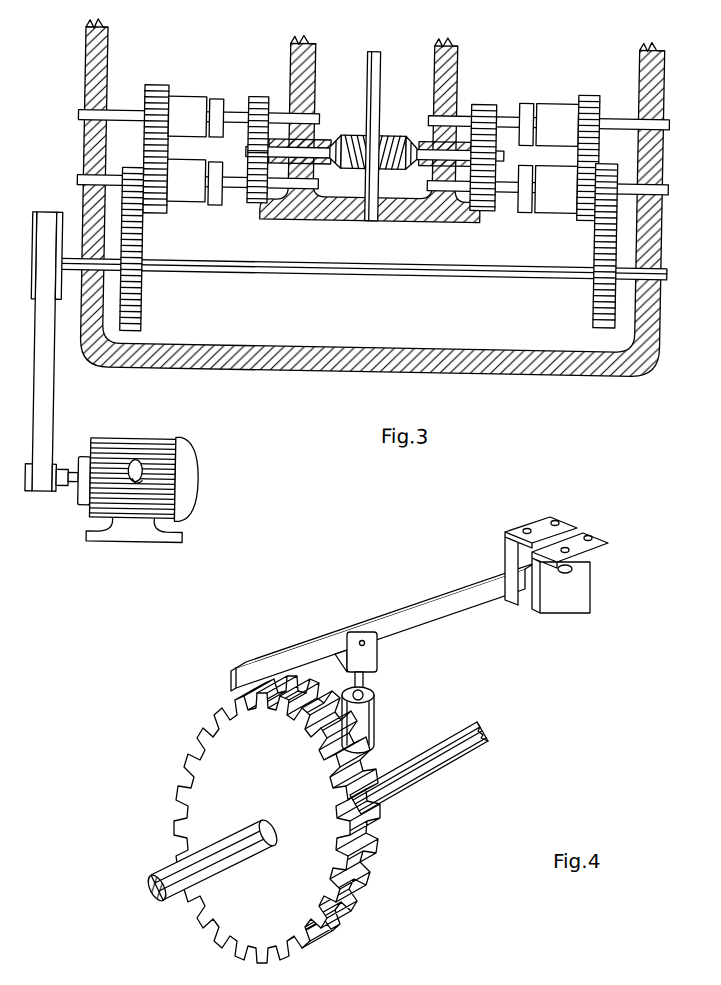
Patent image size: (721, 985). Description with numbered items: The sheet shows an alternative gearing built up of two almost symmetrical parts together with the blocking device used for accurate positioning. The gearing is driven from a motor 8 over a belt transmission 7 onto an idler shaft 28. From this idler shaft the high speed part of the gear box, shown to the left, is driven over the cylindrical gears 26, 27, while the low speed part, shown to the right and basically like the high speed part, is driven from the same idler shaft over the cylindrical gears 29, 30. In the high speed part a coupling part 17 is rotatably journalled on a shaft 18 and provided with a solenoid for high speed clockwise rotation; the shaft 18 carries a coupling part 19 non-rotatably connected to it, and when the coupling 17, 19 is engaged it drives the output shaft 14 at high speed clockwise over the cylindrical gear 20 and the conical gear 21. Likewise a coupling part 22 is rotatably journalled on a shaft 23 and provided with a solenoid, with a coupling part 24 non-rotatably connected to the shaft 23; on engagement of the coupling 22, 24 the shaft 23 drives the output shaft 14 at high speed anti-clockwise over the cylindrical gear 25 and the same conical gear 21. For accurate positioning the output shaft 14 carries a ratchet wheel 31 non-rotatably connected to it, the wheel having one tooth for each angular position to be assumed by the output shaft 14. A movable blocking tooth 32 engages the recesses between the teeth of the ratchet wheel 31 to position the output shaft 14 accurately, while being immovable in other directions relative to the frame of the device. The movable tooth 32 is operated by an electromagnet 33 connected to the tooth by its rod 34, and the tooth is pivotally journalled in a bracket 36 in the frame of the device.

In FIG. 3, the belt transmission 7 is at (57, 412).
In FIG. 3, the motor 8 is at (193, 480).
In FIG. 3, the output shaft 14 is at (378, 65).
In FIG. 4, the output shaft 14 is at (480, 728).
In FIG. 3, the coupling part 17 is at (192, 95).
In FIG. 3, the shaft 18 is at (122, 110).
In FIG. 3, the coupling part 19 is at (216, 97).
In FIG. 3, the cylindrical gear 20 is at (258, 94).
In FIG. 3, the conical gear 21 is at (335, 128).
In FIG. 3, the coupling part 22 is at (180, 201).
In FIG. 3, the shaft 23 is at (284, 186).
In FIG. 3, the coupling part 24 is at (215, 203).
In FIG. 3, the cylindrical gear 25 is at (252, 200).
In FIG. 3, the cylindrical gear 26 is at (143, 298).
In FIG. 3, the cylindrical gear 27 is at (157, 84).
In FIG. 3, the idler shaft 28 is at (276, 271).
In FIG. 3, the cylindrical gear 29 is at (595, 295).
In FIG. 3, the cylindrical gear 30 is at (585, 87).
In FIG. 4, the ratchet wheel 31 is at (262, 906).
In FIG. 4, the movable blocking tooth 32 is at (313, 634).
In FIG. 4, the electromagnet 33 is at (375, 720).
In FIG. 4, the rod 34 is at (364, 693).
In FIG. 4, the bracket 36 is at (563, 598).